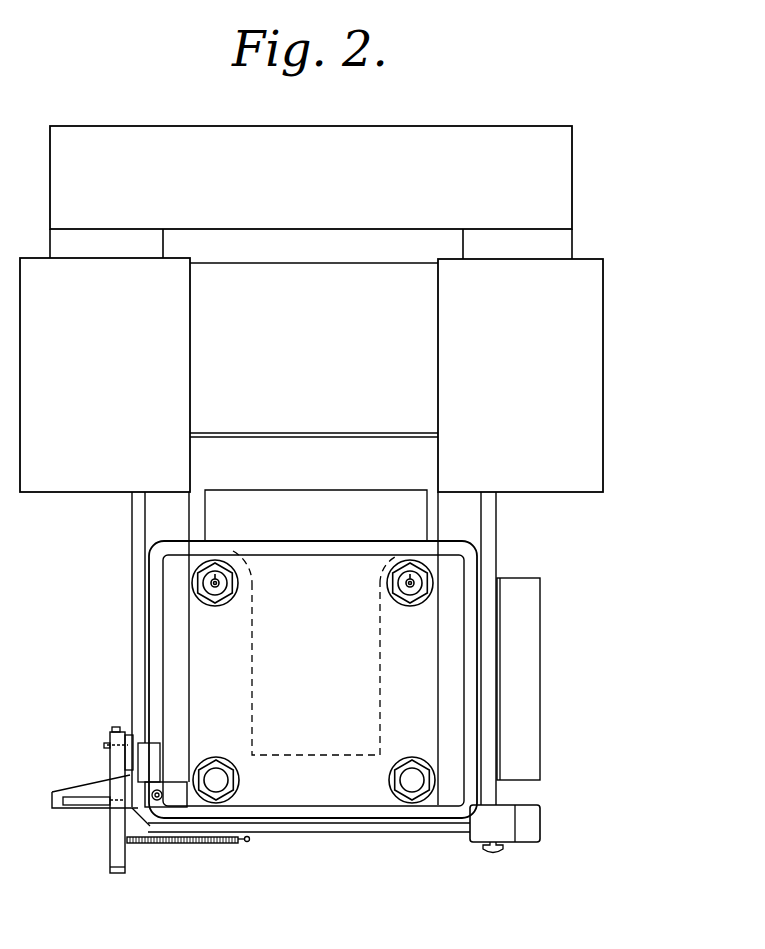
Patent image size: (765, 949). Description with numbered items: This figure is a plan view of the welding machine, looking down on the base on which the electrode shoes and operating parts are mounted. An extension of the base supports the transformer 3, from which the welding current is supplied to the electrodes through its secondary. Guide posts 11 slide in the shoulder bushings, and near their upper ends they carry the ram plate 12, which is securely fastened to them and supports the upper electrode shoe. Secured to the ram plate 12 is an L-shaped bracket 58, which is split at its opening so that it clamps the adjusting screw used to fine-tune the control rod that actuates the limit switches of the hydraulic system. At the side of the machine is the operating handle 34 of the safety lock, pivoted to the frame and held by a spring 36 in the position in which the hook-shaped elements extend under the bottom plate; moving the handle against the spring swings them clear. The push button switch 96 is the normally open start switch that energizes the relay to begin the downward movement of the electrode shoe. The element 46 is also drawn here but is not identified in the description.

The transformer 3 is at (598, 275).
The guide post 11 is at (223, 583).
The ram plate 12 is at (188, 652).
The operating handle 34 is at (110, 830).
The spring 36 is at (182, 847).
The pivot pin 46 is at (157, 800).
The L-shaped bracket 58 is at (172, 782).
The push button switch 96 is at (493, 856).